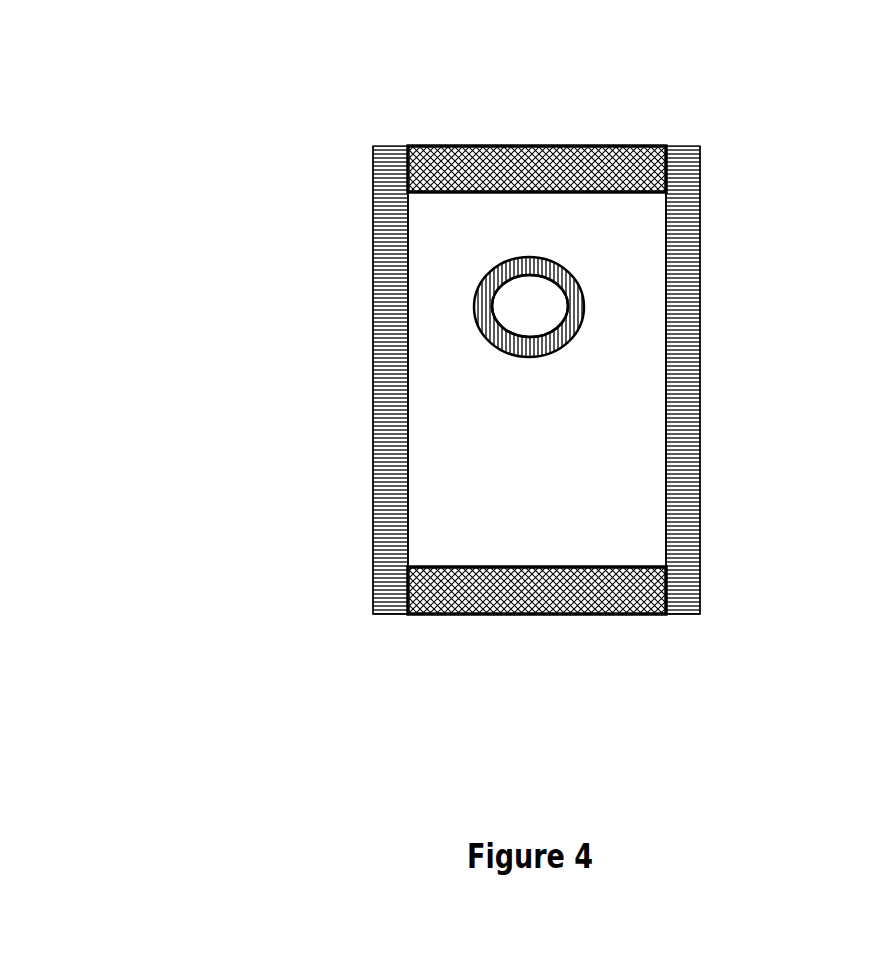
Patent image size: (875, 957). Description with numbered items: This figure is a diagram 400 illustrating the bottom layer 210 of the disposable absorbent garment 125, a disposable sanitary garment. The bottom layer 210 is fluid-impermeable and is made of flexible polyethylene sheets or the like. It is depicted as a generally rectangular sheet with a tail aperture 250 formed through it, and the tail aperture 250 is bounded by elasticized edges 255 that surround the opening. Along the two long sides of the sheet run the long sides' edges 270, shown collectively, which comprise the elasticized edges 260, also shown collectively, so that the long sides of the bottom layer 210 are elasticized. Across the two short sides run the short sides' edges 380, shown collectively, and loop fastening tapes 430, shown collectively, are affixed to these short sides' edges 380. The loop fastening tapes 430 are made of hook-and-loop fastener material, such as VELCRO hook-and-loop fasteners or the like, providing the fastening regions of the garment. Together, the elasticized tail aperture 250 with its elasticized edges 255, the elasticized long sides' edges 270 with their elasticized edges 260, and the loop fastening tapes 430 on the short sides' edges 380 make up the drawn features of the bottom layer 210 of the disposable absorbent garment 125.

The diagram 400 is at (112, 130).
The disposable absorbent garment 125 is at (338, 466).
The bottom layer 210 is at (553, 491).
The tail aperture 250 is at (550, 325).
The elasticized edges 255 is at (586, 297).
The elasticized edges 260 is at (395, 348).
The long sides' edges 270 is at (373, 540).
The short sides' edges 380 is at (472, 145).
The loop fastening tapes 430 is at (585, 175).